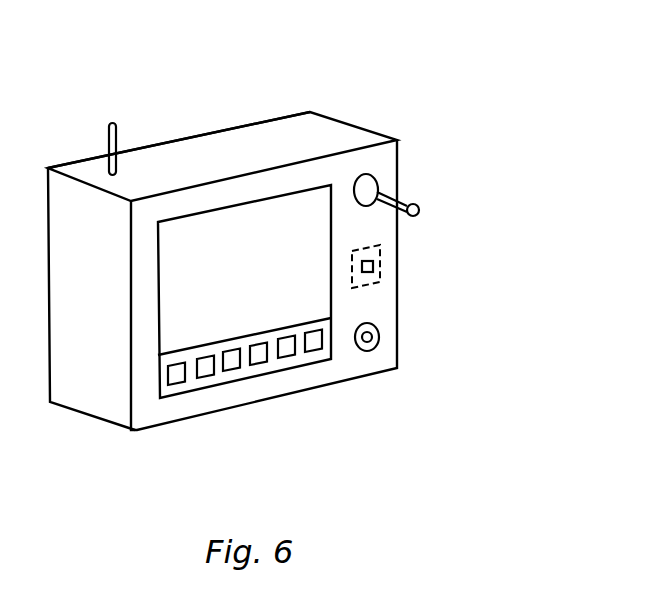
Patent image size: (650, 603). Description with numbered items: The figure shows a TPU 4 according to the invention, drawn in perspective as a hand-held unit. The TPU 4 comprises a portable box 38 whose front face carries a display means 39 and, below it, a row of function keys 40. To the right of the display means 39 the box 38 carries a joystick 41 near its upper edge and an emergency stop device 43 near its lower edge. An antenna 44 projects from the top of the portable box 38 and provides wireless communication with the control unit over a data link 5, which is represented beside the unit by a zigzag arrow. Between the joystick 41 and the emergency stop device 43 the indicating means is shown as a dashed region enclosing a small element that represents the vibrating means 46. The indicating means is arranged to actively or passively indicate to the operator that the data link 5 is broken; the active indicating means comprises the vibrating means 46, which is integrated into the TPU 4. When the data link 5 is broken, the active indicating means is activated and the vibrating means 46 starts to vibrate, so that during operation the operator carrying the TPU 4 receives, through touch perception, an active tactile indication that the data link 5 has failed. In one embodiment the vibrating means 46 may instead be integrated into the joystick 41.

The TPU 4 is at (333, 133).
The portable box 38 is at (215, 128).
The display means 39 is at (287, 222).
The function keys 40 is at (178, 377).
The joystick 41 is at (420, 204).
The emergency stop device 43 is at (373, 337).
The antenna 44 is at (110, 123).
The vibrating means 46 is at (373, 267).
The data link 5 is at (565, 218).